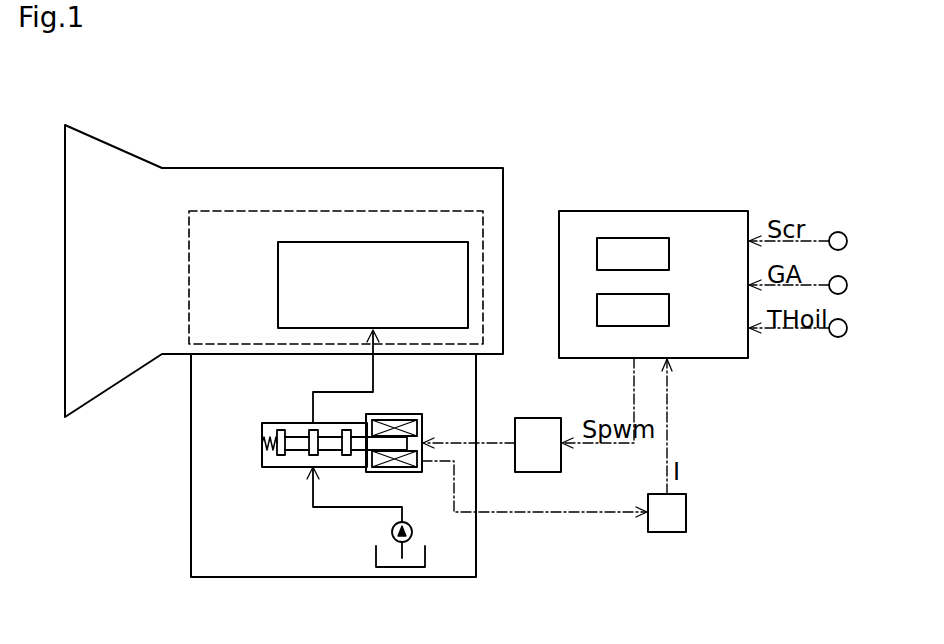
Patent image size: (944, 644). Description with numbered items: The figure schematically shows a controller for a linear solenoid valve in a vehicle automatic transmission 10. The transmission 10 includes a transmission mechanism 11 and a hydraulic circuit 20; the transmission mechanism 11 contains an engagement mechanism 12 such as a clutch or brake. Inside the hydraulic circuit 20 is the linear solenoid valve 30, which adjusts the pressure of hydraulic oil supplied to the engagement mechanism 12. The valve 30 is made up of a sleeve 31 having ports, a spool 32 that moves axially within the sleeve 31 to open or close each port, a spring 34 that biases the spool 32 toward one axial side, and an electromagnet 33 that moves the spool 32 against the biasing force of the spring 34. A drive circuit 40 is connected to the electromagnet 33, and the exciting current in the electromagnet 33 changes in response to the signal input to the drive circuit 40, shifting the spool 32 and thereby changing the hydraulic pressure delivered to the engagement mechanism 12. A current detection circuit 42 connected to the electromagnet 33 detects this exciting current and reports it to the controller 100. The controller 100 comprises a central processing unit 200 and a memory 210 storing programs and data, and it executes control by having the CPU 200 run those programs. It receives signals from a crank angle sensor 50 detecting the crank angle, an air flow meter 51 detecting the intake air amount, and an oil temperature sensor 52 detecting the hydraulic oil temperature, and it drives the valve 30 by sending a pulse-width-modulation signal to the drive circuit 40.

The vehicle automatic transmission 10 is at (336, 168).
The transmission mechanism 11 is at (189, 277).
The engagement mechanism 12 is at (278, 284).
The hydraulic circuit 20 is at (191, 462).
The linear solenoid valve 30 is at (247, 410).
The sleeve 31 is at (285, 423).
The spool 32 is at (301, 455).
The electromagnet 33 is at (400, 414).
The spring 34 is at (263, 446).
The drive circuit 40 is at (541, 472).
The current detection circuit 42 is at (686, 511).
The crank angle sensor 50 is at (847, 243).
The air flow meter 51 is at (847, 287).
The oil temperature sensor 52 is at (847, 330).
The controller 100 is at (656, 211).
The central processing unit 200 is at (670, 254).
The memory 210 is at (670, 310).